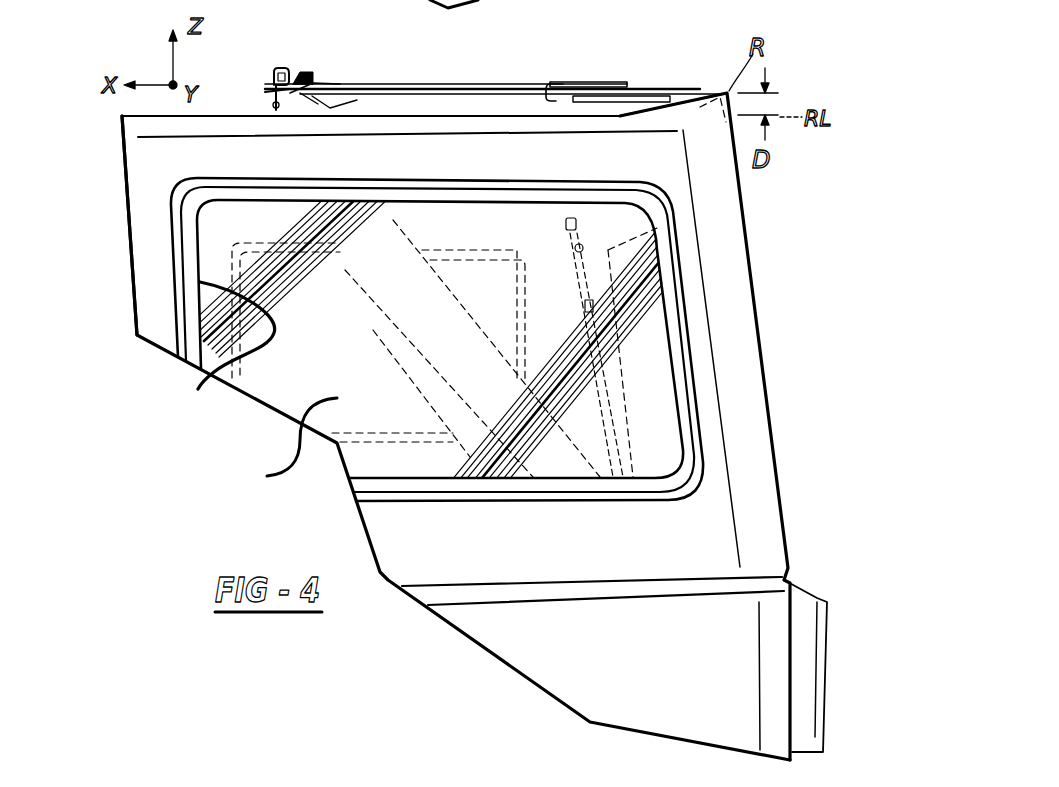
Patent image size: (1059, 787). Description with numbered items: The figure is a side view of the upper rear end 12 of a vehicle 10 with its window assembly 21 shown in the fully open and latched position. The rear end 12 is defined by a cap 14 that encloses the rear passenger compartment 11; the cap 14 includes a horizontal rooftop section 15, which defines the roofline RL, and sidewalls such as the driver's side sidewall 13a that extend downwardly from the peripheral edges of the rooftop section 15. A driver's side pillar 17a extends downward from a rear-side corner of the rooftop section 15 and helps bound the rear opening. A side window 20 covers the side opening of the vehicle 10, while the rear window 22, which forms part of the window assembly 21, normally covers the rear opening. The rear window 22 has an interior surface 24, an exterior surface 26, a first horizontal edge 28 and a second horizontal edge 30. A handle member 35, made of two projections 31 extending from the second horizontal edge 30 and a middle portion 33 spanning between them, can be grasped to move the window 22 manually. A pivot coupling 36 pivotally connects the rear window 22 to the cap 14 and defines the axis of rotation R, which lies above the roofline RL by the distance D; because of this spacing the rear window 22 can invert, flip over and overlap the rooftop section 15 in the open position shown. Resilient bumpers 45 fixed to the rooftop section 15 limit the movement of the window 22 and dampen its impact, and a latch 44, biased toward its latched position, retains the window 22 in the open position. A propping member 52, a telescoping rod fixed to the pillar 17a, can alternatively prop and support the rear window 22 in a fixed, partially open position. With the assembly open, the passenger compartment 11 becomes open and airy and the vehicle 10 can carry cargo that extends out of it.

The vehicle 10 is at (103, 113).
The passenger compartment 11 is at (312, 350).
The upper rear end 12 is at (767, 238).
The driver's side sidewall 13a is at (148, 172).
The cap 14 is at (158, 148).
The rooftop section 15 is at (502, 115).
The driver's side pillar 17a is at (740, 320).
The side window 20 is at (254, 388).
The window assembly 21 is at (640, 76).
The rear window 22 is at (435, 88).
The interior surface 24 is at (590, 80).
The exterior surface 26 is at (550, 92).
The first horizontal edge 28 is at (704, 90).
The second horizontal edge 30 is at (313, 97).
The projections 31 is at (265, 92).
The middle portion 33 is at (300, 74).
The handle member 35 is at (320, 76).
The pivot coupling 36 is at (784, 100).
The latch 44 is at (283, 62).
The bumpers 45 is at (357, 100).
The propping member 52 is at (580, 325).